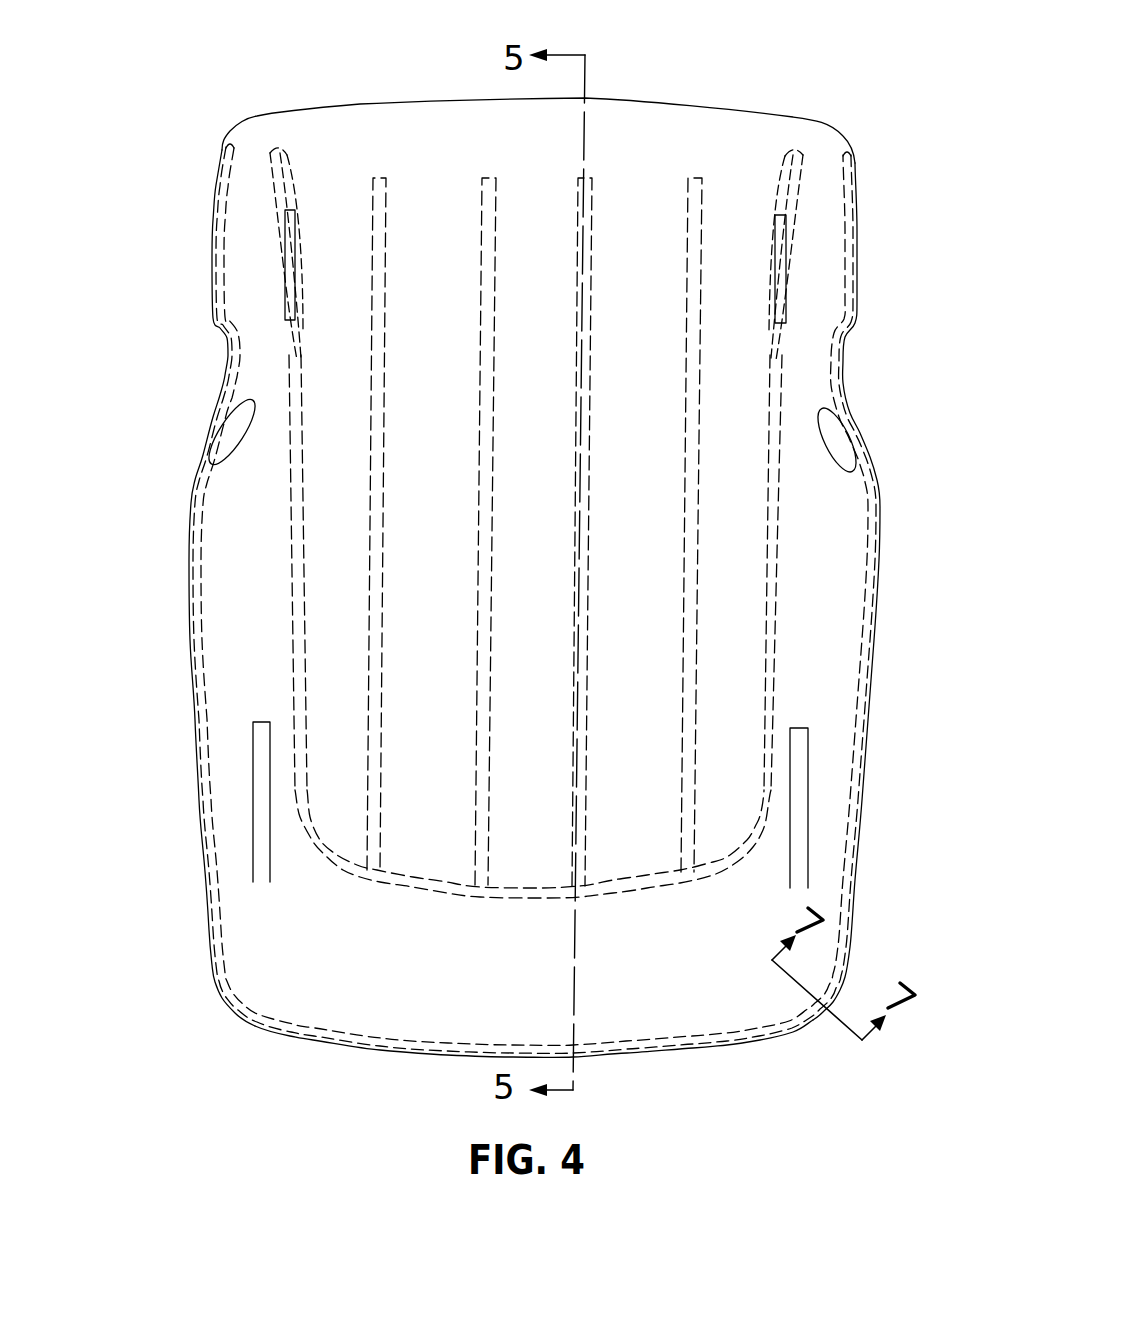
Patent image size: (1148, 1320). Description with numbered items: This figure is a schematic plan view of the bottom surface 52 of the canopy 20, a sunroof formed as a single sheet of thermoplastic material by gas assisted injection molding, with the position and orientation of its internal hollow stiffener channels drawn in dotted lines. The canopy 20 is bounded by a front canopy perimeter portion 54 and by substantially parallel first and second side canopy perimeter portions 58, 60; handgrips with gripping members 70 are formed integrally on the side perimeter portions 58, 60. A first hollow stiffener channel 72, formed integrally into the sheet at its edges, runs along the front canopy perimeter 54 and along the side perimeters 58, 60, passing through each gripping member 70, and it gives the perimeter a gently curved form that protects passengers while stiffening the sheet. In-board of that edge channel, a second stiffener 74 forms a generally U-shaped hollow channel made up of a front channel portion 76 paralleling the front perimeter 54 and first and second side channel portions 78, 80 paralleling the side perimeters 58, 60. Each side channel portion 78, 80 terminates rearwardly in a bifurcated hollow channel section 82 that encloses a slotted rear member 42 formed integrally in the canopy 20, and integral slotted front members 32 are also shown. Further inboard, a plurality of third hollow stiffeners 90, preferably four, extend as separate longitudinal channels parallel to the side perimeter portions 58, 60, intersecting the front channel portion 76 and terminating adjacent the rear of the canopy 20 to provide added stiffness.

The canopy 20 is at (535, 577).
The slotted front members 32 is at (270, 867).
The slotted rear member 42 is at (295, 295).
The bottom surface 52 is at (660, 238).
The front canopy perimeter portion 54 is at (673, 1053).
The first side canopy perimeter portion 58 is at (872, 690).
The second side canopy perimeter portion 60 is at (193, 680).
The gripping member 70 is at (208, 433).
The first hollow stiffener channel 72 is at (217, 408).
The second stiffener 74 is at (537, 669).
The front channel portion 76 is at (457, 897).
The first side channel portion 78 is at (292, 612).
The second side channel portion 80 is at (773, 617).
The bifurcated rearward hollow channel section 82 is at (304, 253).
The third hollow stiffeners 90 is at (478, 427).